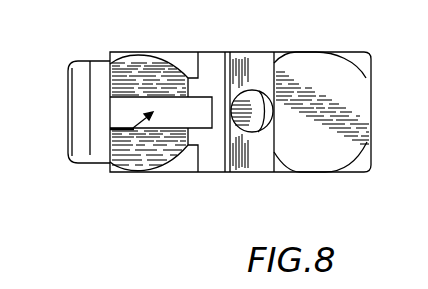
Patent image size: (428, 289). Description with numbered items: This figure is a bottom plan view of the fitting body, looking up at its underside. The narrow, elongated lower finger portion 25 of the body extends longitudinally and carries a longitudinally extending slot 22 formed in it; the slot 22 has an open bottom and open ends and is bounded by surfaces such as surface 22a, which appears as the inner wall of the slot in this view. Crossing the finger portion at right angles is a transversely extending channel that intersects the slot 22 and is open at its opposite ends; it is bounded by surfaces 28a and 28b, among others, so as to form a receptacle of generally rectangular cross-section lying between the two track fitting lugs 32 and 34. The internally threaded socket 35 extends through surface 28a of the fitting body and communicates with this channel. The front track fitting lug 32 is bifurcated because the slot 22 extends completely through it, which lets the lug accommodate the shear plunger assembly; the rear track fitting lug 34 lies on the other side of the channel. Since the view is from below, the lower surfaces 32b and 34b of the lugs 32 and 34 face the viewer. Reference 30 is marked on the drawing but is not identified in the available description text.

The slot 22 is at (114, 133).
The surface 22a is at (127, 105).
The lower finger portion 25 is at (198, 132).
The surface 28a is at (247, 62).
The surface 28b is at (217, 62).
The housing 30 is at (90, 61).
The front track fitting lug 32 is at (77, 62).
The lower surface 32b is at (130, 162).
The track fitting lug 34 is at (342, 62).
The lower surface 34b is at (323, 150).
The internally threaded socket 35 is at (256, 135).